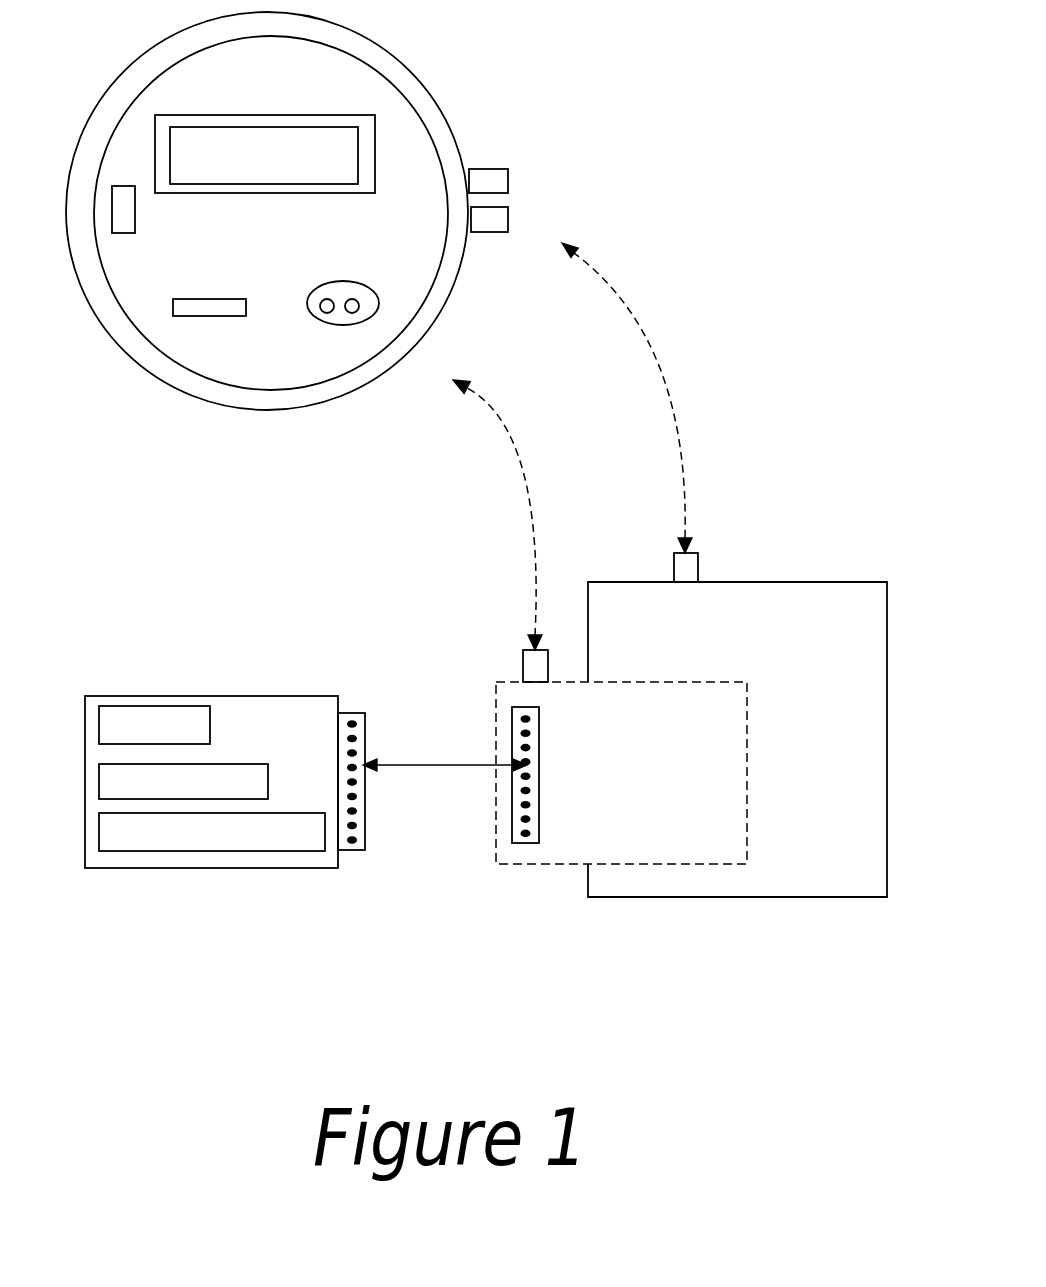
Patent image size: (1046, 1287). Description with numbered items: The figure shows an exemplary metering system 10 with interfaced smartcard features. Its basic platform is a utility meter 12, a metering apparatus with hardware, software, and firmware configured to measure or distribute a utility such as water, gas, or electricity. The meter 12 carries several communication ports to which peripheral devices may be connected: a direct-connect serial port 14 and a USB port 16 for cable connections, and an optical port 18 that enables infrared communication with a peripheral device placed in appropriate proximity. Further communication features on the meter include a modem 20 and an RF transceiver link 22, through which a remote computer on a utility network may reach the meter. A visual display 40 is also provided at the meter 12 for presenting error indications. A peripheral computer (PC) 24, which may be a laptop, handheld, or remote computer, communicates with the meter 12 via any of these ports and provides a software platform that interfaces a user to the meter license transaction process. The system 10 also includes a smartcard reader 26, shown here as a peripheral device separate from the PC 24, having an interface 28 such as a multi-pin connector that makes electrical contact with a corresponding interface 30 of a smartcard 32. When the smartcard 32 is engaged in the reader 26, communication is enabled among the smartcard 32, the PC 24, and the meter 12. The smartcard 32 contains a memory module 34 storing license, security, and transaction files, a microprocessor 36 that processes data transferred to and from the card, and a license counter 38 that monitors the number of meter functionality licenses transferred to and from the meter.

The metering system 10 is at (663, 108).
The utility meter 12 is at (385, 50).
The serial port 14 is at (508, 173).
The USB port 16 is at (508, 216).
The optical port 18 is at (342, 278).
The modem 20 is at (207, 300).
The RF transceiver link 22 is at (135, 210).
The peripheral computer (PC) 24 is at (767, 582).
The smartcard reader 26 is at (545, 867).
The interface 28 is at (512, 728).
The interface 30 is at (365, 818).
The smartcard 32 is at (235, 696).
The memory module 34 is at (98, 728).
The microprocessor 36 is at (98, 782).
The license counter 38 is at (98, 832).
The visual display 40 is at (277, 160).